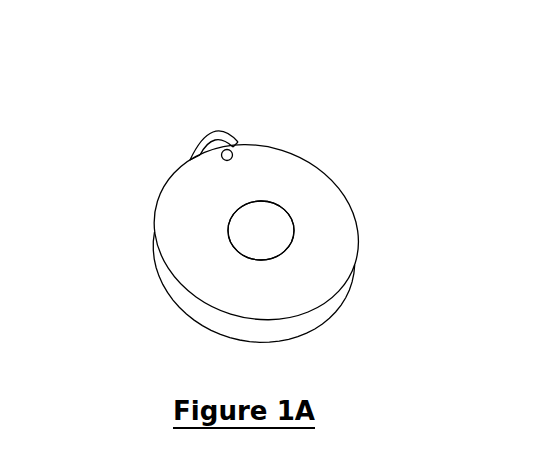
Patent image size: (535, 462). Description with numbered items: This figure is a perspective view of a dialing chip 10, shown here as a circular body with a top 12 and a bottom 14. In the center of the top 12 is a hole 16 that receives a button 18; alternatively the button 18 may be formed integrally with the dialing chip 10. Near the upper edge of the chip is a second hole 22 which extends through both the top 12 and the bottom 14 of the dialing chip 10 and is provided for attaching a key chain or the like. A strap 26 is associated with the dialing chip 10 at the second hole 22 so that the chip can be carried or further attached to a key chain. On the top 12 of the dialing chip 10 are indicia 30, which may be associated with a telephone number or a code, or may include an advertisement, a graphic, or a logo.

The dialing chip 10 is at (102, 56).
The top 12 is at (313, 183).
The bottom 14 is at (335, 310).
The hole 16 is at (237, 250).
The button 18 is at (240, 220).
The second hole 22 is at (237, 142).
The strap 26 is at (207, 132).
The indicia 30 is at (337, 252).